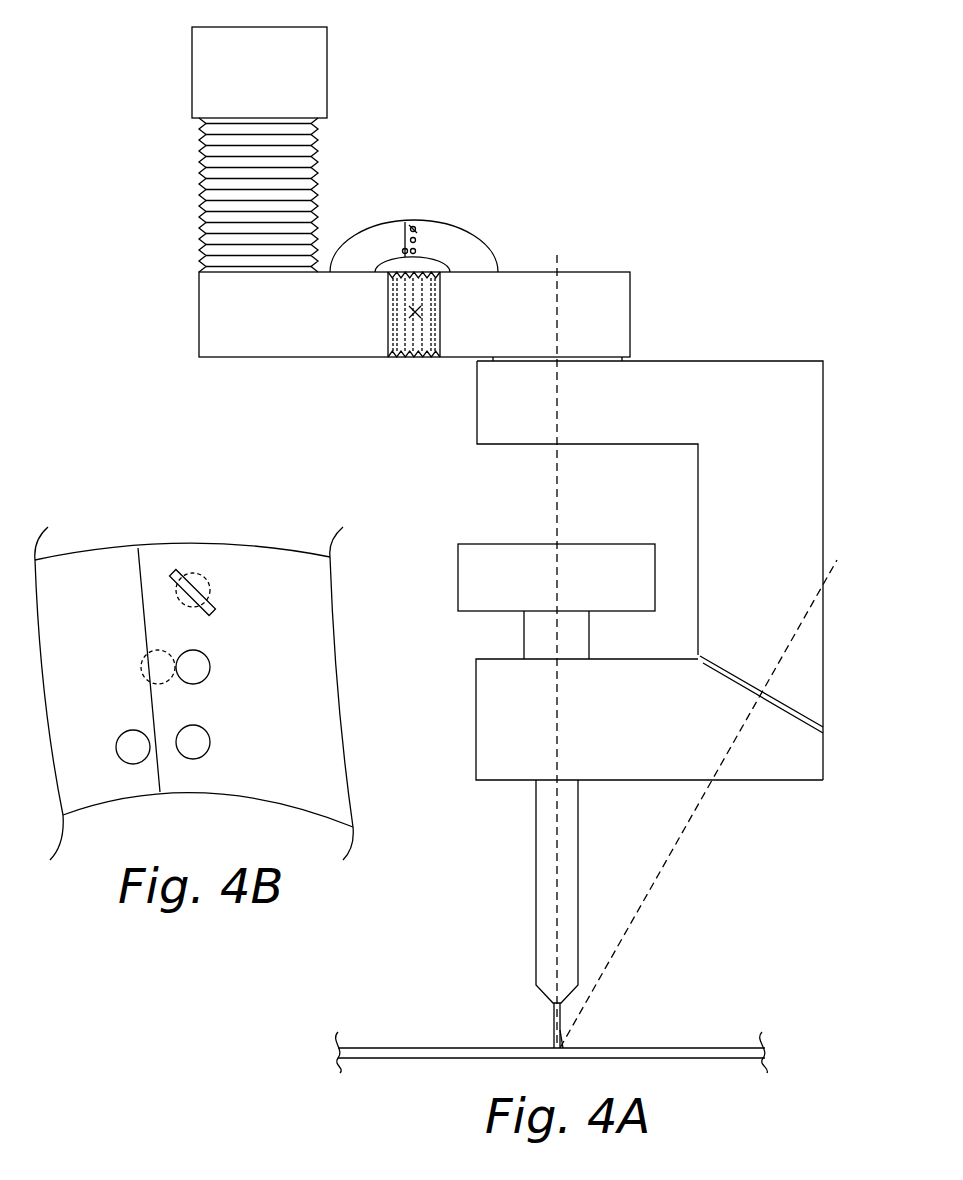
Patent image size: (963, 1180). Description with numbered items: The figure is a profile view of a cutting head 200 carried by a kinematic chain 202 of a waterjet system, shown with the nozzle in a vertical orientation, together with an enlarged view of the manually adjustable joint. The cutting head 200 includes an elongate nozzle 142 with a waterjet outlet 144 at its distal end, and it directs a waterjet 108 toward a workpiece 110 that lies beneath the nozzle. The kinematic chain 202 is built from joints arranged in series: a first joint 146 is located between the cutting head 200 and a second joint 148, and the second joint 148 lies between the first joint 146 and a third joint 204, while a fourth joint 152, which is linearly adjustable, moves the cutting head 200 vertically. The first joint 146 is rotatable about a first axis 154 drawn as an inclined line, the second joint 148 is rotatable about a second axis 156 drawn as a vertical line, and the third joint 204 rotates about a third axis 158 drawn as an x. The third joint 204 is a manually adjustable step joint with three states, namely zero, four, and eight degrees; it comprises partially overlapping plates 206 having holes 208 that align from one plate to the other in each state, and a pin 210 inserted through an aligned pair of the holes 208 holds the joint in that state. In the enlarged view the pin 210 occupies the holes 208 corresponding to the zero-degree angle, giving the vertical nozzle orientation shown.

In FIG. 4A, the waterjet 108 is at (563, 1035).
In FIG. 4A, the workpiece 110 is at (700, 1048).
In FIG. 4A, the elongate nozzle 142 is at (535, 872).
In FIG. 4A, the waterjet outlet 144 is at (553, 1008).
In FIG. 4A, the first joint 146 is at (797, 710).
In FIG. 4A, the second joint 148 is at (592, 356).
In FIG. 4A, the fourth joint 152 is at (203, 203).
In FIG. 4A, the first axis 154 is at (677, 840).
In FIG. 4A, the second axis 156 is at (557, 475).
In FIG. 4A, the third axis 158 is at (415, 315).
In FIG. 4A, the cutting head 200 is at (432, 648).
In FIG. 4A, the kinematic chain 202 is at (708, 240).
In FIG. 4A, the third joint 204 is at (437, 230).
In FIG. 4B, the partially overlapping plates 206 is at (193, 558).
In FIG. 4B, the holes 208 is at (188, 757).
In FIG. 4B, the pin 210 is at (178, 583).